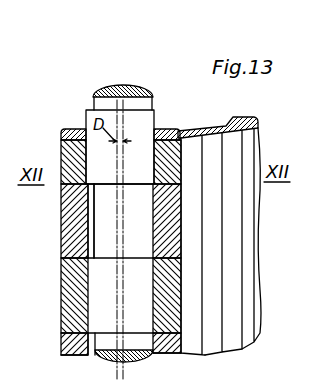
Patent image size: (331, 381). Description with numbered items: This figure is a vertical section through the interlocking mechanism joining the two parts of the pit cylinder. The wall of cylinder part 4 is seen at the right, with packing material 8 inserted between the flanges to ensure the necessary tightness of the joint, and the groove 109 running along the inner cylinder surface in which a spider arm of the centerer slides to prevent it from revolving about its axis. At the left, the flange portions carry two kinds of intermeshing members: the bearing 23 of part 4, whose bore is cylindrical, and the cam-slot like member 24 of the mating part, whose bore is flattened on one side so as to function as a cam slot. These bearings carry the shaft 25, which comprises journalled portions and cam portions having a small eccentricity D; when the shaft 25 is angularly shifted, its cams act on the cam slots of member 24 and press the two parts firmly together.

The cylinder part 4 is at (193, 150).
The packing material 8 is at (217, 235).
The groove 109 is at (248, 285).
The bearing 23 is at (78, 283).
The cam-slot like member 24 is at (75, 210).
The shaft 25 is at (105, 246).